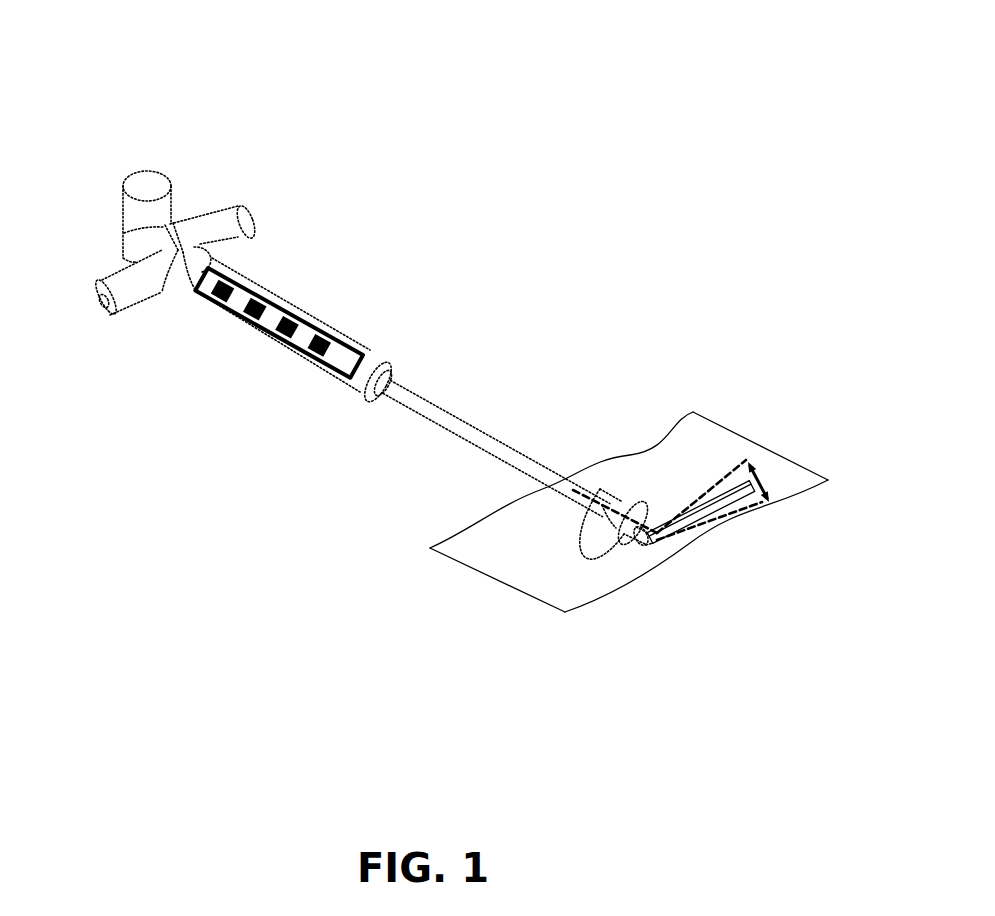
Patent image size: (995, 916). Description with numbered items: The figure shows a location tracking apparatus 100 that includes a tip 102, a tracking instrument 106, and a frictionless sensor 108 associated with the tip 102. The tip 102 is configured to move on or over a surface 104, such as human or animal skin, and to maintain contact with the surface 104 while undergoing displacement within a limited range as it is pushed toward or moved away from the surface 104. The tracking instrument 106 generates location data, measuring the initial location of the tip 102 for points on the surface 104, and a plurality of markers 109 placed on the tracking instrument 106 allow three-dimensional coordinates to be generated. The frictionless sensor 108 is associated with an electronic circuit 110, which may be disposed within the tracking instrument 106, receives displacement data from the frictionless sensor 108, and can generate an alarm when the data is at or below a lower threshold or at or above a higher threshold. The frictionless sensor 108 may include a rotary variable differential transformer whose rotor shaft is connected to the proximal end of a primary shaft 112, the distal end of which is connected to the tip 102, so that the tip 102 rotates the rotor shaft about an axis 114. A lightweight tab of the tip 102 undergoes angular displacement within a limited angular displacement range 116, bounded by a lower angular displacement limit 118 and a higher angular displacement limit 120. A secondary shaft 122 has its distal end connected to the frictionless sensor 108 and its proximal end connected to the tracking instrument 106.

The location tracking apparatus 100 is at (601, 150).
The tip 102 is at (697, 510).
The surface 104 is at (456, 559).
The tracking instrument 106 is at (373, 398).
The frictionless sensor 108 is at (626, 506).
The markers 109 is at (100, 288).
The electronic circuit 110 is at (372, 358).
The primary shaft 112 is at (646, 540).
The axis 114 is at (610, 512).
The limited angular displacement range 116 is at (764, 478).
The lower angular displacement limit 118 is at (757, 503).
The higher angular displacement limit 120 is at (738, 462).
The secondary shaft 122 is at (487, 433).